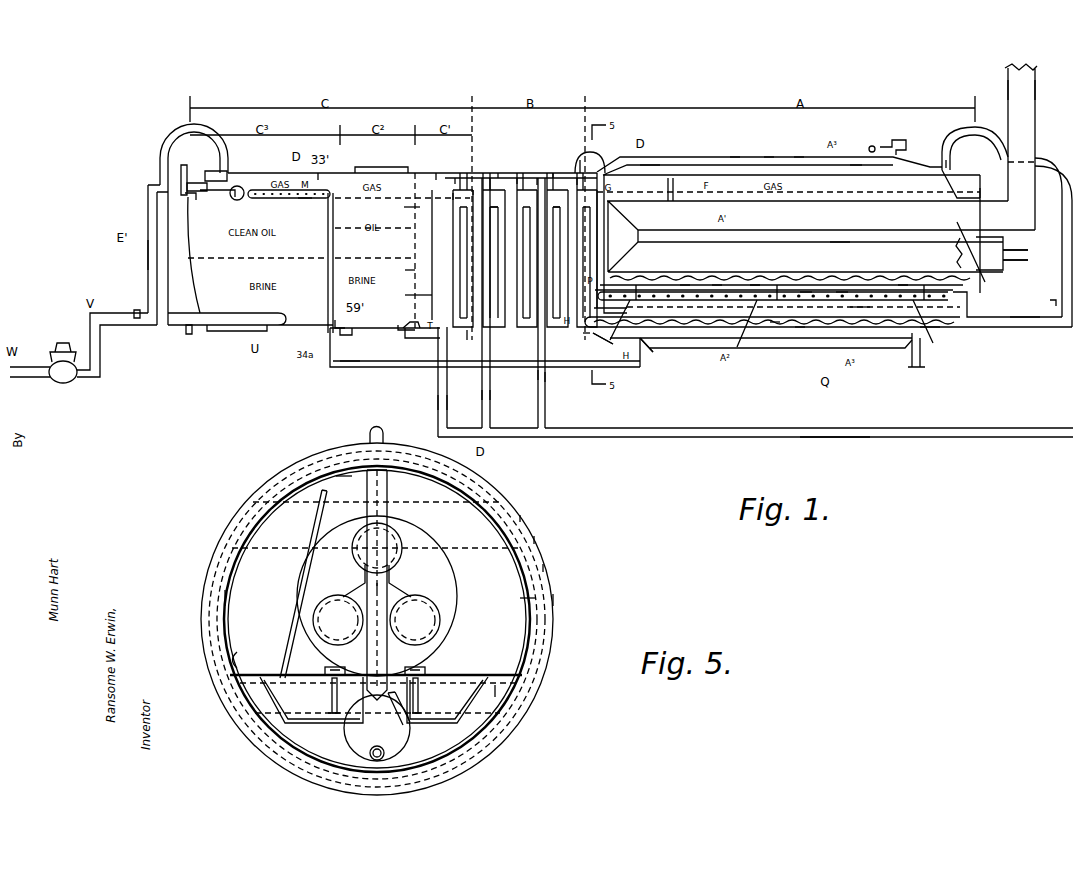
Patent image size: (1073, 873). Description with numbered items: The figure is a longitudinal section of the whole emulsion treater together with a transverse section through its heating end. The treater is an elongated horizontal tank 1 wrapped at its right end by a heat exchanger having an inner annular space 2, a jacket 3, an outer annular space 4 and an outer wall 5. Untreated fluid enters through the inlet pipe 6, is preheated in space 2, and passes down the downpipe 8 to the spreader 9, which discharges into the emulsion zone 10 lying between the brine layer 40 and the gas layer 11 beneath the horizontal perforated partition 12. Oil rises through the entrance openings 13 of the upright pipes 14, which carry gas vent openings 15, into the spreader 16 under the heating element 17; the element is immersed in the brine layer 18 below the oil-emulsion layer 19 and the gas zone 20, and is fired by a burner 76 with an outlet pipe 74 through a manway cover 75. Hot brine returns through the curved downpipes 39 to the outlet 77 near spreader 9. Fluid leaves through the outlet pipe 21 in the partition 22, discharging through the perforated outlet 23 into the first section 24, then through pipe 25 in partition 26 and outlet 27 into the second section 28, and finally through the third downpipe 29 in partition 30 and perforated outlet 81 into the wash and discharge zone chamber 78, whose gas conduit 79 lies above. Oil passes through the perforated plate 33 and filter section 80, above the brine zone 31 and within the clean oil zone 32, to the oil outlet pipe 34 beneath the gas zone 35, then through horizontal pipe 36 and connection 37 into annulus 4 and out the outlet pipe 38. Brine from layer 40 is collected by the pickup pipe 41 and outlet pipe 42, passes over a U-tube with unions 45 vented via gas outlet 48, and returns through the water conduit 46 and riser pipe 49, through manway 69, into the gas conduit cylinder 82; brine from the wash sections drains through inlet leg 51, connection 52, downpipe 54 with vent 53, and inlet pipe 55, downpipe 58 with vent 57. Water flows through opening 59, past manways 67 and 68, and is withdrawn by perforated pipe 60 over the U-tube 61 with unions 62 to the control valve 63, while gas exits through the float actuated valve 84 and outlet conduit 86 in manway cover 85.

In FIG. 1, the tank 1 is at (928, 324).
In FIG. 5, the tank 1 is at (553, 600).
In FIG. 1, the inner annular space 2 is at (855, 165).
In FIG. 5, the inner annular space 2 is at (535, 540).
In FIG. 1, the jacket 3 is at (798, 157).
In FIG. 5, the jacket 3 is at (545, 568).
In FIG. 1, the outer annular space 4 is at (768, 157).
In FIG. 5, the outer annular space 4 is at (523, 518).
In FIG. 1, the wall or outer jacket 5 is at (733, 157).
In FIG. 1, the inlet pipe 6 is at (922, 362).
In FIG. 1, the downpipe 8 is at (634, 237).
In FIG. 5, the downpipe 8 is at (385, 532).
In FIG. 1, the spreader 9 is at (806, 290).
In FIG. 5, the spreader 9 is at (370, 694).
In FIG. 1, the emulsion zone 10 is at (955, 322).
In FIG. 5, the emulsion zone 10 is at (500, 691).
In FIG. 1, the gas layer 11 is at (842, 290).
In FIG. 5, the gas layer 11 is at (462, 674).
In FIG. 1, the horizontal perforated partition 12 is at (716, 284).
In FIG. 5, the horizontal perforated partition 12 is at (240, 658).
In FIG. 1, the entrance openings 13 is at (738, 361).
In FIG. 5, the entrance openings 13 is at (328, 712).
In FIG. 1, the upright pipes 14 is at (640, 283).
In FIG. 5, the upright pipes 14 is at (330, 695).
In FIG. 1, the gas vent openings 15 is at (755, 284).
In FIG. 5, the gas vent openings 15 is at (373, 662).
In FIG. 1, the spreader 16 is at (684, 284).
In FIG. 5, the spreader 16 is at (325, 667).
In FIG. 1, the heating element 17 is at (976, 278).
In FIG. 5, the heating element 17 is at (340, 600).
In FIG. 1, the brine layer 18 is at (840, 241).
In FIG. 5, the brine layer 18 is at (235, 598).
In FIG. 1, the oil-emulsion layer 19 is at (674, 180).
In FIG. 5, the oil-emulsion layer 19 is at (275, 528).
In FIG. 1, the gas zone 20 is at (648, 168).
In FIG. 5, the gas zone 20 is at (345, 480).
In FIG. 1, the outlet pipe 21 is at (574, 180).
In FIG. 1, the partition 22 is at (588, 160).
In FIG. 1, the perforated outlet 23 is at (599, 339).
In FIG. 1, the first section 24 is at (587, 336).
In FIG. 1, the pipe 25 is at (517, 178).
In FIG. 1, the partition 26 is at (537, 178).
In FIG. 1, the outlet 27 is at (530, 332).
In FIG. 1, the second section 28 is at (537, 376).
In FIG. 1, the third downpipe 29 is at (458, 176).
In FIG. 1, the partition 30 is at (478, 186).
In FIG. 1, the brine zone 31 is at (467, 332).
In FIG. 1, the clean oil zone 32 is at (404, 207).
In FIG. 1, the perforated plate 33 is at (378, 167).
In FIG. 1, the oil outlet pipe 34 is at (303, 199).
In FIG. 1, the gas zone 35 is at (272, 189).
In FIG. 1, the horizontal pipe 36 is at (352, 368).
In FIG. 1, the connection 37 is at (652, 355).
In FIG. 1, the outlet pipe 38 is at (900, 140).
In FIG. 1, the brine layer 40 is at (800, 328).
In FIG. 1, the brine pickup pipe 41 is at (774, 322).
In FIG. 5, the brine pickup pipe 41 is at (349, 750).
In FIG. 1, the outlet pipe 42 is at (1022, 319).
In FIG. 1, the unions 45 is at (1052, 303).
In FIG. 1, the water conduit 46 is at (835, 437).
In FIG. 1, the gas outlet 48 is at (948, 168).
In FIG. 1, the liquid level riser pipe 49 is at (438, 402).
In FIG. 1, the inlet leg 51 is at (560, 332).
In FIG. 1, the horizontal connection 52 is at (553, 192).
In FIG. 1, the gas vent 53 is at (552, 185).
In FIG. 1, the downpipe 54 is at (545, 378).
In FIG. 1, the inlet pipe 55 is at (496, 192).
In FIG. 1, the vent 57 is at (497, 185).
In FIG. 1, the downpipe 58 is at (482, 394).
In FIG. 1, the opening 59 is at (405, 325).
In FIG. 1, the perforated pipe 60 is at (232, 326).
In FIG. 1, the U-tube 61 is at (148, 254).
In FIG. 1, the unions 62 is at (136, 310).
In FIG. 1, the water outlet control valve 63 is at (53, 340).
In FIG. 1, the upper manway 67 is at (347, 338).
In FIG. 1, the lower manway 68 is at (392, 167).
In FIG. 1, the manway 69 is at (420, 338).
In FIG. 1, the outlet pipe 74 is at (1036, 90).
In FIG. 1, the manway cover 75 is at (983, 188).
In FIG. 1, the burner 76 is at (1028, 255).
In FIG. 5, the outlet 77 is at (408, 724).
In FIG. 1, the wash and discharge zone chamber 78 is at (402, 270).
In FIG. 1, the gas conduit 79 is at (446, 187).
In FIG. 1, the filter section 80 is at (375, 237).
In FIG. 1, the perforated outlet 81 is at (470, 340).
In FIG. 1, the gas conduit cylinder 82 is at (410, 295).
In FIG. 1, the float actuated valve 84 is at (215, 176).
In FIG. 1, the manway cover 85 is at (186, 198).
In FIG. 1, the outlet conduit 86 is at (181, 170).
In FIG. 5, the curved downpipes 39 is at (270, 700).